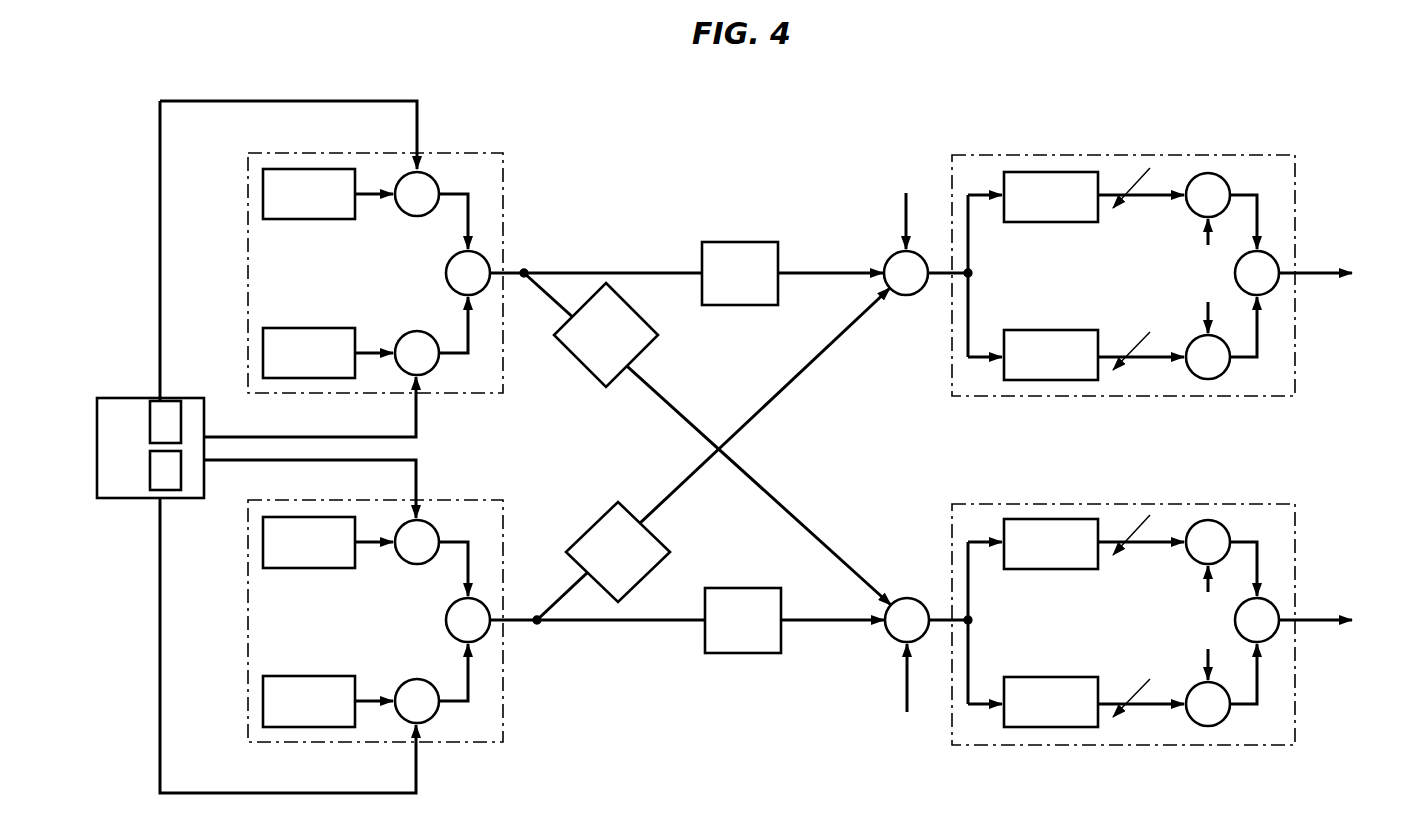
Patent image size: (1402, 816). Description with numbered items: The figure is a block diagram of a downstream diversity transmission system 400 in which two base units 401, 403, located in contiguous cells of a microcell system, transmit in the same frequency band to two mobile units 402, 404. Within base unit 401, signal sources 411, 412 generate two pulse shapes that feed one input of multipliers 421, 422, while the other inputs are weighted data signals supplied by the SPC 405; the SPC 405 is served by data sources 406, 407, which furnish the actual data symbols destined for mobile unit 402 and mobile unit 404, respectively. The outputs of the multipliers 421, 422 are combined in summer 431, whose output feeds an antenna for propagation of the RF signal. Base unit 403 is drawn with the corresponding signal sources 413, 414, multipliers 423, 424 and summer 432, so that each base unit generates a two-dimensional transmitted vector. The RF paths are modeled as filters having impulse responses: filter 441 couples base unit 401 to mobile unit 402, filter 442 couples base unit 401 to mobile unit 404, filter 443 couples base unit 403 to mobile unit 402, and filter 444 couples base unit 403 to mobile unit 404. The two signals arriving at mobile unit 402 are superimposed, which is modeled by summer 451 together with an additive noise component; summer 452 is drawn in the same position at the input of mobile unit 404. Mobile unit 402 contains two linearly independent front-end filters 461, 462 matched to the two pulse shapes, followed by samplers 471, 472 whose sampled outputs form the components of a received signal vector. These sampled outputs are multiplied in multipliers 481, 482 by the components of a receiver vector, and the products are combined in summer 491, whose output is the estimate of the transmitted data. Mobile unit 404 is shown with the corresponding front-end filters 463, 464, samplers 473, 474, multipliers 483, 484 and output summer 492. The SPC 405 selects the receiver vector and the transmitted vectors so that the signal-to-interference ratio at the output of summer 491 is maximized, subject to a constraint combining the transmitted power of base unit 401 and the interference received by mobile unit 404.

The downstream diversity transmission system 400 is at (848, 96).
The base unit 401 is at (503, 172).
The mobile unit 402 is at (1295, 172).
The base unit 403 is at (503, 705).
The mobile unit 404 is at (1295, 520).
The SPC 405 is at (97, 440).
The data source 406 is at (150, 410).
The data source 407 is at (150, 485).
The signal source 411 is at (275, 169).
The signal source 412 is at (263, 352).
The spreading waveform generator p21(t) 413 is at (262, 528).
The spreading waveform generator p22(t) 414 is at (263, 693).
The multiplier 421 is at (404, 212).
The multiplier 422 is at (404, 337).
The multiplier 423 is at (404, 560).
The multiplier 424 is at (404, 684).
The summer 431 is at (485, 258).
The summer 432 is at (485, 605).
The filter 441 is at (718, 242).
The filter 442 is at (660, 338).
The filter 443 is at (668, 549).
The filter 444 is at (748, 588).
The summer 451 is at (910, 296).
The channel summer with noise 452 is at (913, 597).
The front-end filter 461 is at (1020, 172).
The front-end filter 462 is at (1020, 330).
The correlator waveform phi21(t) 463 is at (1020, 519).
The correlator waveform phi22(t) 464 is at (1045, 677).
The sampler 471 is at (1132, 172).
The sampler 472 is at (1130, 335).
The adaptive weight control 473 is at (1142, 552).
The adaptive weight control 474 is at (1128, 690).
The multiplier 481 is at (1210, 173).
The multiplier 482 is at (1213, 379).
The weighting multiplier 483 is at (1208, 519).
The weighting multiplier 484 is at (1213, 726).
The summer 491 is at (1274, 290).
The output summer 492 is at (1274, 636).